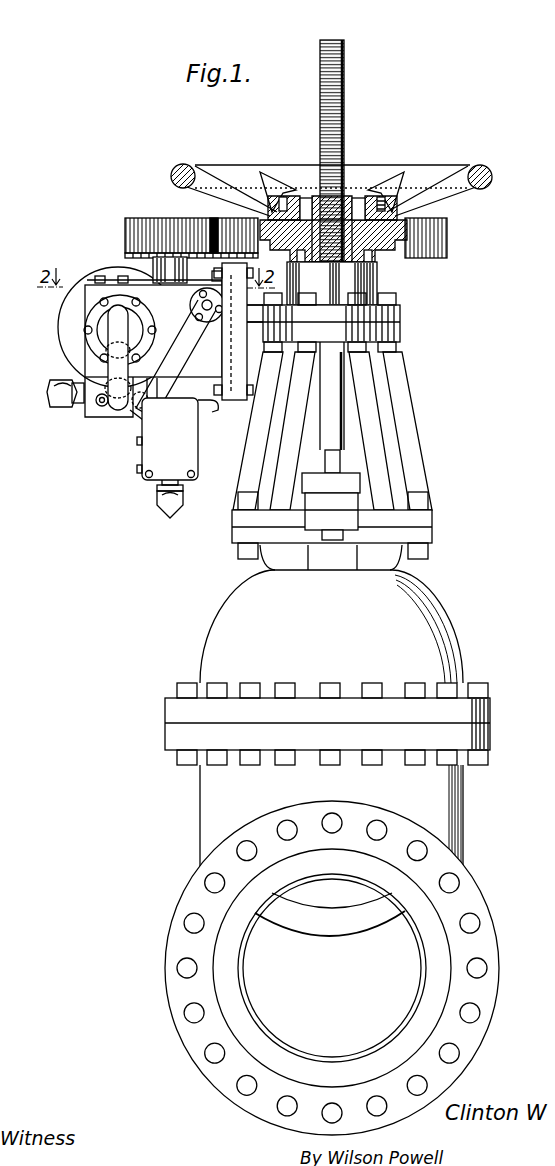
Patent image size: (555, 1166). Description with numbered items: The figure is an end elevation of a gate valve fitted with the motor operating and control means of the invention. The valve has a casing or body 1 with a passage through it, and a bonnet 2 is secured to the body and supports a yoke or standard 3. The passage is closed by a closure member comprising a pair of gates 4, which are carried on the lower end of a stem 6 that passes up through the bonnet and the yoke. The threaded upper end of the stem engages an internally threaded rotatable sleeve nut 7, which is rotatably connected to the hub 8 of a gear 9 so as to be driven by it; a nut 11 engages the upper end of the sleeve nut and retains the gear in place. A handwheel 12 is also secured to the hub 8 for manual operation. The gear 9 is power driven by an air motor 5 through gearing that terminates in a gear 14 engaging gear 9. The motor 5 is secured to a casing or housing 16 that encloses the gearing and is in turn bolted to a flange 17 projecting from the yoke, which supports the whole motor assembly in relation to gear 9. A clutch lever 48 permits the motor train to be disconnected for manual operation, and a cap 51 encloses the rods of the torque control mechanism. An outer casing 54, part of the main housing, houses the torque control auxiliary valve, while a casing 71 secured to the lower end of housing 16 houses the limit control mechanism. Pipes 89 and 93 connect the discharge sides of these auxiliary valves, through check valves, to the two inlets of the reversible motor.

The casing or body 1 is at (465, 803).
The bonnet 2 is at (452, 645).
The yoke or standard 3 is at (408, 418).
The gates 4 is at (360, 925).
The motor 5 is at (68, 322).
The stem 6 is at (345, 148).
The sleeve nut 7 is at (372, 262).
The hub 8 is at (392, 224).
The gear 9 is at (448, 241).
The nut 11 is at (372, 197).
The handwheel 12 is at (487, 170).
The gear 14 is at (141, 218).
The casing or housing 16 is at (90, 350).
The flange 17 is at (242, 398).
The clutch lever 48 is at (175, 365).
The cap 51 is at (78, 375).
The outer casing 54 is at (90, 410).
The casing 71 is at (190, 461).
The pipe 89 is at (58, 402).
The pipe 93 is at (171, 510).